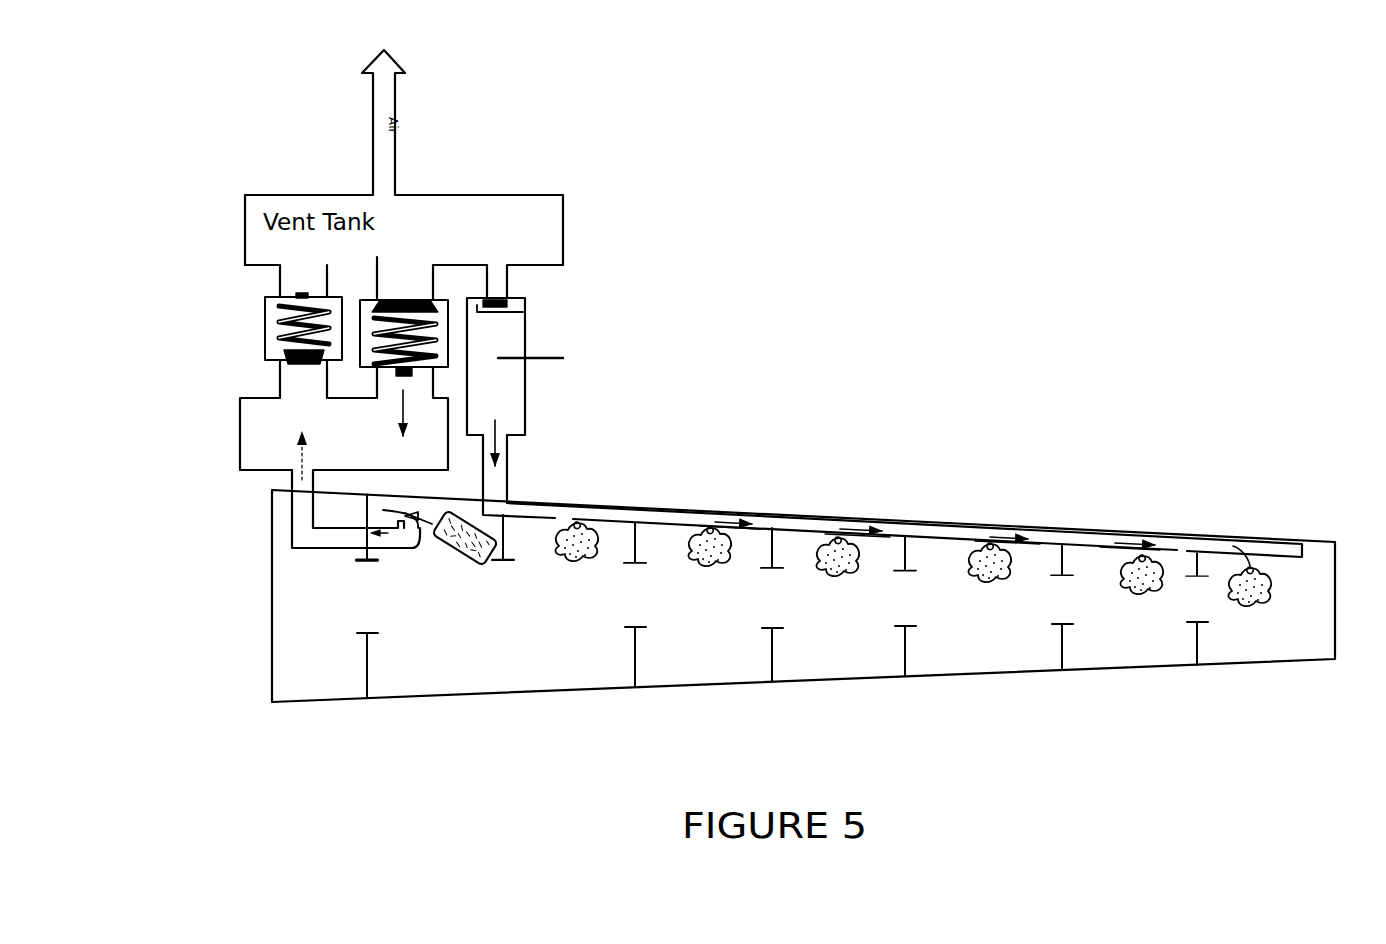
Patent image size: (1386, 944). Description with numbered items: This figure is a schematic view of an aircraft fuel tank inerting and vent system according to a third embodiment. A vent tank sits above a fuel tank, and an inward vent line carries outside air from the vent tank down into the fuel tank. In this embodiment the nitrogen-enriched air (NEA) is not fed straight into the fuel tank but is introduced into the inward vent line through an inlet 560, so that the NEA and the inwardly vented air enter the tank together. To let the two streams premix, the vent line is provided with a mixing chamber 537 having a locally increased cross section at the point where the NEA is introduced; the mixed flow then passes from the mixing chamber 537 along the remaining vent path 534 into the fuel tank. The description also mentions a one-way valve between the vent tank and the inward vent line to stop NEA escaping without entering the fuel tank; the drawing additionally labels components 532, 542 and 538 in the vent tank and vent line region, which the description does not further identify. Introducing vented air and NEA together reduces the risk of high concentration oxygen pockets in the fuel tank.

The pressure relief valve 532 is at (408, 285).
The vacuum relief valve 542 is at (258, 346).
The mixing chamber 537 is at (525, 407).
The check valve disc 538 is at (505, 300).
The inlet 560 is at (548, 346).
The discharge chute 534 is at (650, 502).